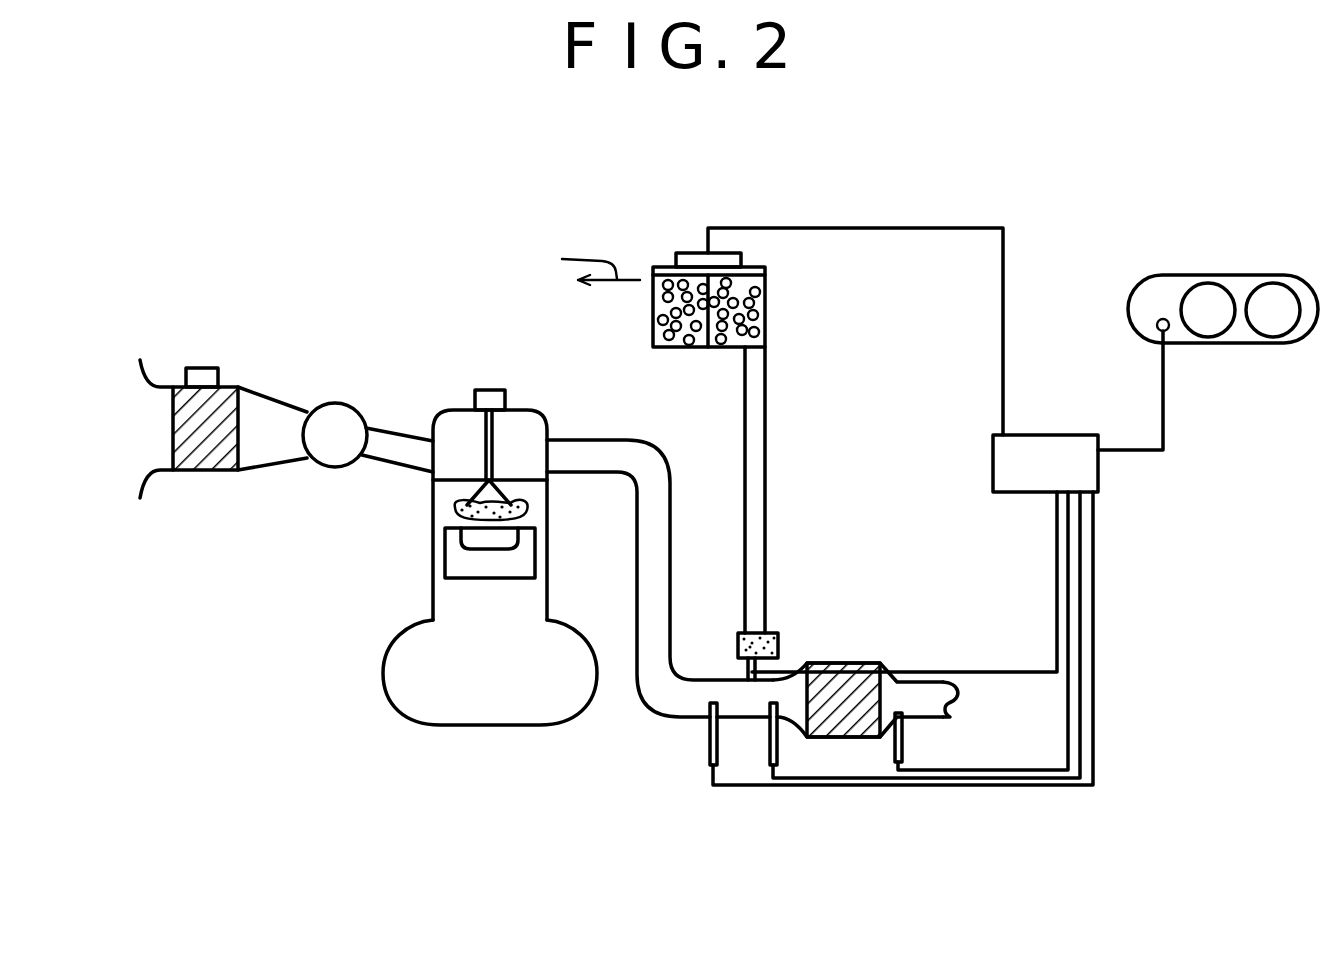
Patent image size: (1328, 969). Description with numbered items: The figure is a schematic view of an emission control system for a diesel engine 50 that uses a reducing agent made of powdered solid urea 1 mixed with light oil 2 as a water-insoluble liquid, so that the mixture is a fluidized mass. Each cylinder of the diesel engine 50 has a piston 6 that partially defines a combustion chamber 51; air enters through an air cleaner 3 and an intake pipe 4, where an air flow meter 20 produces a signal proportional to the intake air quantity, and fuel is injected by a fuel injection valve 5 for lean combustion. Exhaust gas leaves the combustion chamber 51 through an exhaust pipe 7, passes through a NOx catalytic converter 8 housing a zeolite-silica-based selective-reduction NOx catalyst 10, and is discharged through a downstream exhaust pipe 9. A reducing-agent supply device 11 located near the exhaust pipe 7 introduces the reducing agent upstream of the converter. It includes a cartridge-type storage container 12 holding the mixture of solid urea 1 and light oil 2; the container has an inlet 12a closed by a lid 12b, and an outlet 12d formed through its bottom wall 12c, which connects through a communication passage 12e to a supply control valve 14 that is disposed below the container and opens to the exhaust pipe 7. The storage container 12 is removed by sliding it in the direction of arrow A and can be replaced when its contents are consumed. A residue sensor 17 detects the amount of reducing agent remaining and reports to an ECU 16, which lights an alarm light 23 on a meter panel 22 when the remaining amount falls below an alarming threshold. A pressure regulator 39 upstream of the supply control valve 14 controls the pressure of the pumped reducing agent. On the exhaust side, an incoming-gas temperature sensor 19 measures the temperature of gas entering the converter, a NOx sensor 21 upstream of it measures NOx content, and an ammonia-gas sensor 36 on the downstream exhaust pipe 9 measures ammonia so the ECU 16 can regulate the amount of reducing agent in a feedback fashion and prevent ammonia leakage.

The solid urea 1 is at (733, 300).
The light oil 2 is at (663, 304).
The air cleaner 3 is at (216, 470).
The intake pipe 4 is at (396, 433).
The fuel injection valve 5 is at (484, 386).
The piston 6 is at (461, 578).
The exhaust pipe 7 is at (600, 482).
The NOx catalytic converter 8 is at (881, 664).
The downstream exhaust pipe 9 is at (913, 717).
The NOx catalyst 10 is at (840, 700).
The reducing-agent supply device 11 is at (809, 484).
The storage container 12 is at (798, 297).
The inlet 12a is at (688, 253).
The lid 12b is at (703, 253).
The bottom wall 12c is at (688, 347).
The outlet 12d is at (752, 352).
The communication passage 12e is at (768, 493).
The supply control valve 14 is at (748, 676).
The ECU 16 is at (1098, 468).
The residue sensor 17 is at (738, 341).
The incoming-gas temperature sensor 19 is at (771, 750).
The air flow meter 20 is at (200, 368).
The NOx sensor 21 is at (710, 740).
The meter panel 22 is at (1285, 343).
The alarm light 23 is at (1168, 332).
The ammonia-gas sensor 36 is at (882, 767).
The pressure regulator 39 is at (782, 650).
The diesel engine 50 is at (443, 563).
The combustion chamber 51 is at (447, 495).
The arrow A is at (590, 260).